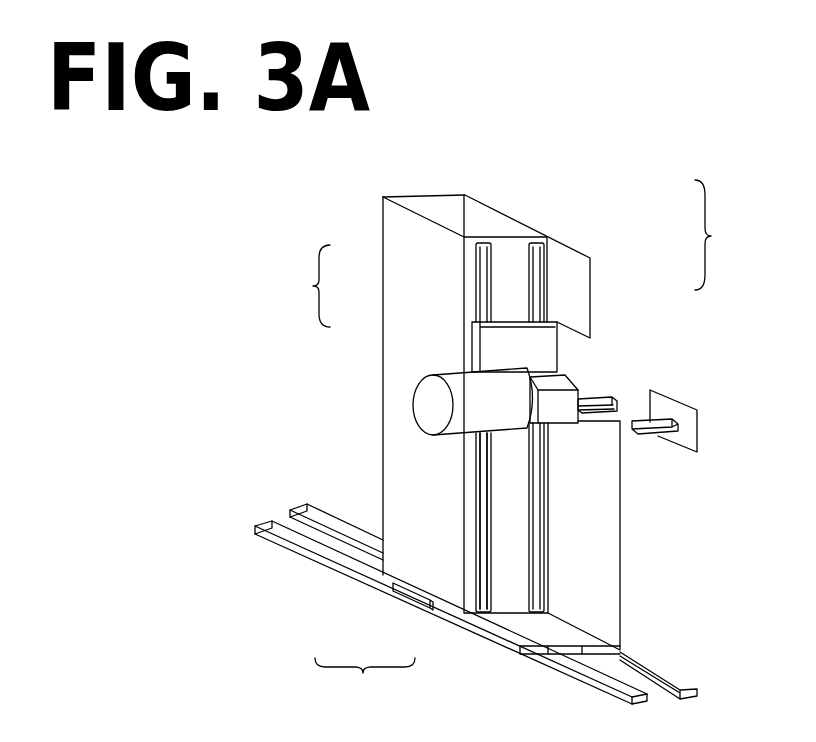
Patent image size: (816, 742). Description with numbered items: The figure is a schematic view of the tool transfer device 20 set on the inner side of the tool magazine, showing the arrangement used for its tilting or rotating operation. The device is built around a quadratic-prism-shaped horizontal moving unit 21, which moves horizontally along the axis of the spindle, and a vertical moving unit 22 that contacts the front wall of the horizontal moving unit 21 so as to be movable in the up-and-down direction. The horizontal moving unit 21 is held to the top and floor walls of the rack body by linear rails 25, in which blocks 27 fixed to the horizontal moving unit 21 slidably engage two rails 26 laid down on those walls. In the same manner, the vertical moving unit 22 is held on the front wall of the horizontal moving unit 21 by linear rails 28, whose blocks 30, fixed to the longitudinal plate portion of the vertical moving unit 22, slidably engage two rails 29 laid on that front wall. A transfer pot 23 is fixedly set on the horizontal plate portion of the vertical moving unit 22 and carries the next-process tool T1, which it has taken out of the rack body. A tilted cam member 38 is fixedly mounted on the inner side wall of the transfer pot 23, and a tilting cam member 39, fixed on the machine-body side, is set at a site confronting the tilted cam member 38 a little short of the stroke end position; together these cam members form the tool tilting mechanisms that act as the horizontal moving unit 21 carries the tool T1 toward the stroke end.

The tool transfer device 20 is at (721, 235).
The horizontal moving unit 21 is at (532, 213).
The vertical moving unit 22 is at (568, 355).
The transfer pot 23 is at (577, 383).
The linear rails 25 is at (365, 683).
The rails 26 is at (355, 546).
The blocks 27 is at (407, 598).
The linear rails 28 is at (303, 286).
The rails 29 is at (529, 263).
The blocks 30 is at (476, 347).
The tilted cam member 38 is at (604, 400).
The tilting cam member 39 is at (645, 437).
The next-process tool T1 is at (433, 405).